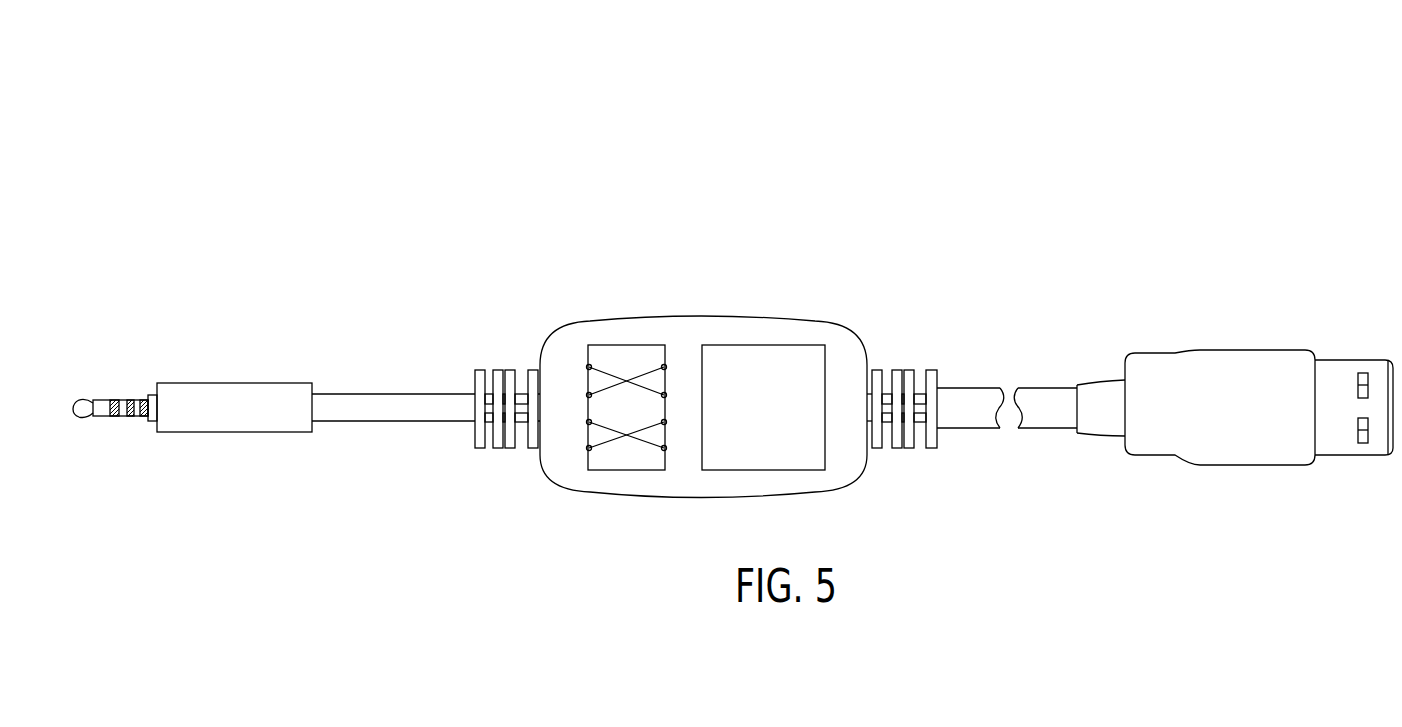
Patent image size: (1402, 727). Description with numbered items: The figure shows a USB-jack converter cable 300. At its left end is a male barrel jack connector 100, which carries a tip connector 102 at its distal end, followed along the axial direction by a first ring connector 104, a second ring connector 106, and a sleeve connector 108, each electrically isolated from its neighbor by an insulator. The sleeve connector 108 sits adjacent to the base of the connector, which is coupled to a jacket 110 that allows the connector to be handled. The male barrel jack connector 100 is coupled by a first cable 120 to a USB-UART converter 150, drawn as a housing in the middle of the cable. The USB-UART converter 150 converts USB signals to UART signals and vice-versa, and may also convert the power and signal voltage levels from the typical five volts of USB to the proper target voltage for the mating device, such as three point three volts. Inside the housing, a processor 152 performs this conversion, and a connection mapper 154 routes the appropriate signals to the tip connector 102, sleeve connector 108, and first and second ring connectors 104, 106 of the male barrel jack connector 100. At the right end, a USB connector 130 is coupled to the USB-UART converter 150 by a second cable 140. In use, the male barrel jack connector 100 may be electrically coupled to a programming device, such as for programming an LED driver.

The male barrel jack connector 100 is at (312, 493).
The tip connector 102 is at (82, 413).
The first ring connector 104 is at (112, 398).
The second ring connector 106 is at (126, 419).
The sleeve connector 108 is at (141, 398).
The jacket 110 is at (227, 383).
The first cable 120 is at (407, 394).
The USB connector 130 is at (1252, 350).
The second cable 140 is at (965, 388).
The USB-UART converter 150 is at (697, 312).
The processor 152 is at (778, 472).
The connection mapper 154 is at (617, 472).
The USB-jack converter cable 300 is at (1233, 143).